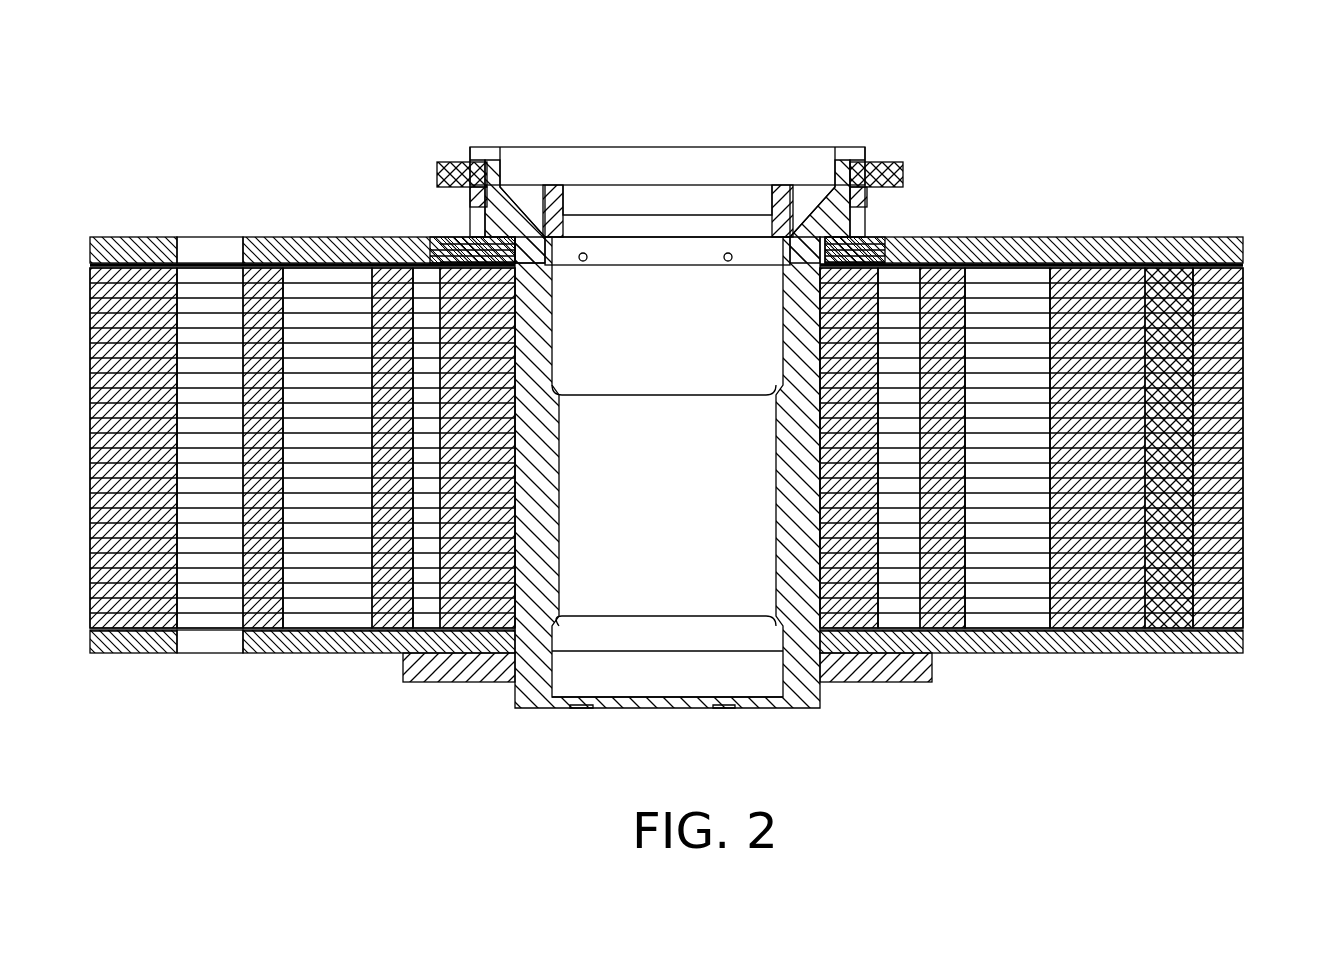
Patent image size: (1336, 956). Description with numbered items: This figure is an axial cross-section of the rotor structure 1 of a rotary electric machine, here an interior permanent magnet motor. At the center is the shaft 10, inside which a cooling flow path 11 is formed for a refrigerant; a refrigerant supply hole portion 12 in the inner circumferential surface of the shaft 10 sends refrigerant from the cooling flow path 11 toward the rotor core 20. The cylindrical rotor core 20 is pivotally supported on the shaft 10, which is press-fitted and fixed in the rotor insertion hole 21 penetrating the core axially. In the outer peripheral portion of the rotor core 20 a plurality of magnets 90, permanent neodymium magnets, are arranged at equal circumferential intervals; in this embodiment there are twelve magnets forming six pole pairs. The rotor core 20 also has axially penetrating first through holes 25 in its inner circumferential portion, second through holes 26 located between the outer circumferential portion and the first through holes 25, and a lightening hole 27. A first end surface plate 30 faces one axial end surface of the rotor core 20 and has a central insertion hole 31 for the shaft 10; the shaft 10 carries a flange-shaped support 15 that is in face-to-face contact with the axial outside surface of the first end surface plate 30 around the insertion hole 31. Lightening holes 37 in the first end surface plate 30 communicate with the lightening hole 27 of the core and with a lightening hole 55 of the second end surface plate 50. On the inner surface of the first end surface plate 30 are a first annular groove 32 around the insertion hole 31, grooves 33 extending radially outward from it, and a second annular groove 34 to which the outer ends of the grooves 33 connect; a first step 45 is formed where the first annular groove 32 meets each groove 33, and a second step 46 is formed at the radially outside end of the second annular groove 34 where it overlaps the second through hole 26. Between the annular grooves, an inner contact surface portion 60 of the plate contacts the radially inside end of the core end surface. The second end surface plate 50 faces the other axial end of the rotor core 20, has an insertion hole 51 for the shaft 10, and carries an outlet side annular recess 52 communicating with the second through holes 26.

The rotor structure 1 is at (1228, 112).
The shaft 10 is at (850, 165).
The cooling flow path 11 is at (697, 540).
The refrigerant supply hole portion 12 is at (772, 255).
The support 15 is at (807, 225).
The rotor core 20 is at (1242, 318).
The rotor insertion hole 21 is at (810, 570).
The first through hole 25 is at (880, 600).
The second through hole 26 is at (970, 600).
The lightening hole 27 is at (180, 600).
The first end surface plate 30 is at (1225, 245).
The insertion hole 31 is at (537, 245).
The first annular groove 32 is at (830, 248).
The groove 33 is at (822, 258).
The second annular groove 34 is at (835, 255).
The lightening hole 37 is at (180, 252).
The first step 45 is at (835, 262).
The second step 46 is at (850, 262).
The second end surface plate 50 is at (1133, 655).
The insertion hole 51 is at (518, 645).
The outlet side annular recess 52 is at (1018, 632).
The lightening hole 55 is at (190, 655).
The inner contact surface portion 60 is at (525, 280).
The magnet 90 is at (1165, 275).